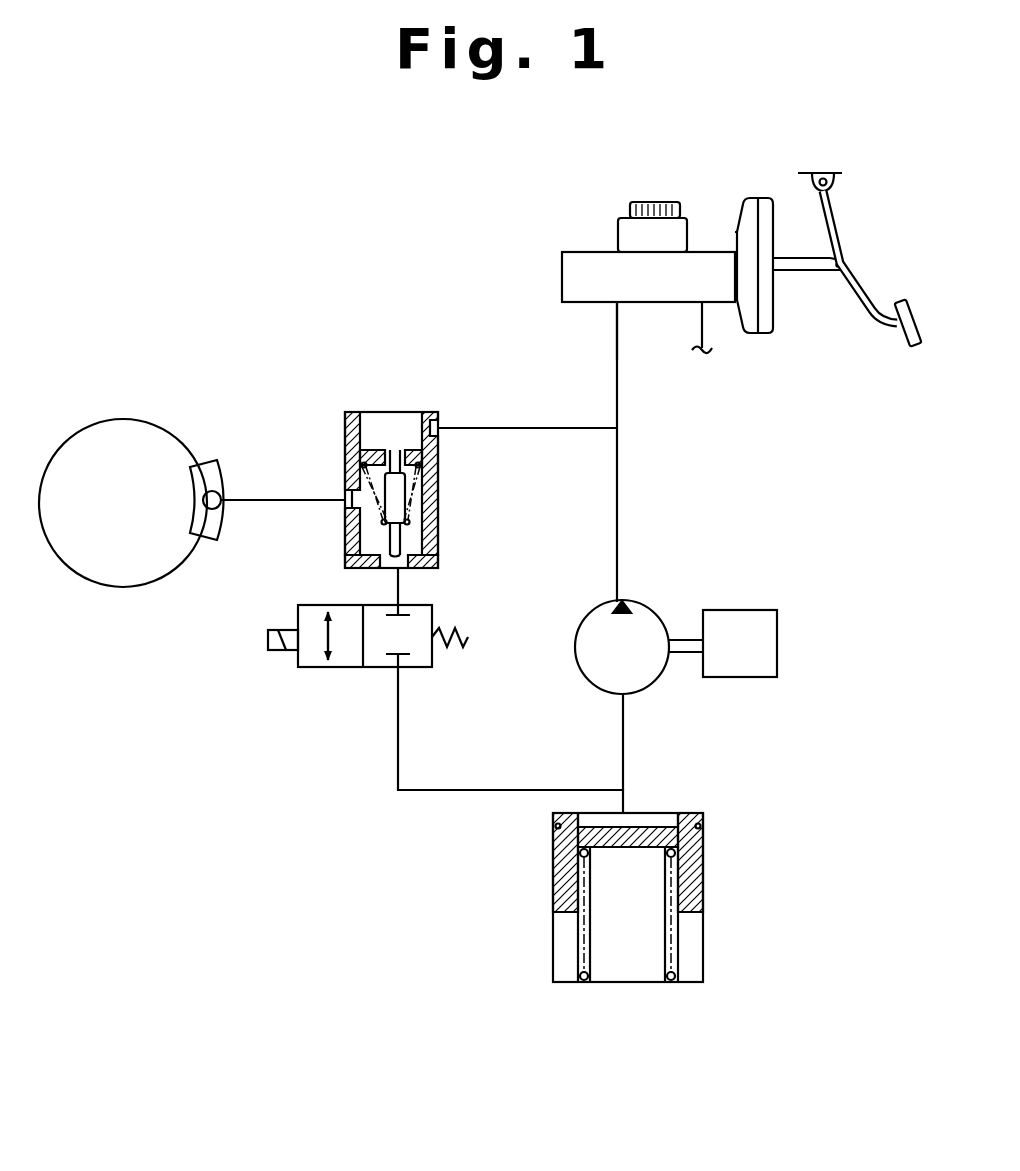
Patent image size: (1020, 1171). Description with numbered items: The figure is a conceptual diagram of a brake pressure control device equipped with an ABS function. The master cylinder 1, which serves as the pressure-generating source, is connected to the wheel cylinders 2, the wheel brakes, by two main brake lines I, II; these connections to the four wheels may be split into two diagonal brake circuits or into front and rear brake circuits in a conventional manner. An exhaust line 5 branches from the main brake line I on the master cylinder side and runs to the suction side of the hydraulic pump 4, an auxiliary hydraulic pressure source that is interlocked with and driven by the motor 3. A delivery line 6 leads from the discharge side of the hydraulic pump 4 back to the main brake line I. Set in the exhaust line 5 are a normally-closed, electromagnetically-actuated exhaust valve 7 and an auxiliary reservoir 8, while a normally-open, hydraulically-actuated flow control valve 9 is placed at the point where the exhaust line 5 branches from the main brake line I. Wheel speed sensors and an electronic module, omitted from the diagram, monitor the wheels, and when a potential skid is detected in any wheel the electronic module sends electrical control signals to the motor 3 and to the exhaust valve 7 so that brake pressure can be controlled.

The master cylinder 1 is at (586, 252).
The wheel cylinder 2 is at (203, 507).
The motor 3 is at (778, 645).
The hydraulic pump 4 is at (650, 607).
The exhaust line 5 is at (428, 792).
The delivery line 6 is at (618, 505).
The exhaust valve 7 is at (342, 668).
The auxiliary reservoir 8 is at (703, 890).
The flow control valve 9 is at (353, 412).
The main brake line I is at (618, 363).
The main brake line II is at (702, 330).